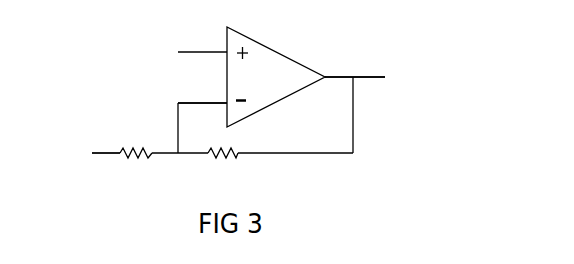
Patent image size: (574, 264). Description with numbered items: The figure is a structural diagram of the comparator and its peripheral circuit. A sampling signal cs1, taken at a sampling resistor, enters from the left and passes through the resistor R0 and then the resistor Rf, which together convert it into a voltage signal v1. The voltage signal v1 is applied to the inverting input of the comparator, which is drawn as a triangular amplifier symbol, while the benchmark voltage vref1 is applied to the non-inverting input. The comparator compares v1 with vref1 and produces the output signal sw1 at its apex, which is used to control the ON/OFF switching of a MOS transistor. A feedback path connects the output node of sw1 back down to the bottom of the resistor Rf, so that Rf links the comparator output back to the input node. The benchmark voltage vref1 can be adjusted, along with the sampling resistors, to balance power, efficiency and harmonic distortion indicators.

The benchmark voltage vref1 is at (187, 36).
The voltage signal v1 is at (201, 86).
The output signal sw1 is at (355, 61).
The sampling signal cs1 is at (96, 132).
The resistor R0 is at (136, 172).
The resistor Rf is at (225, 172).